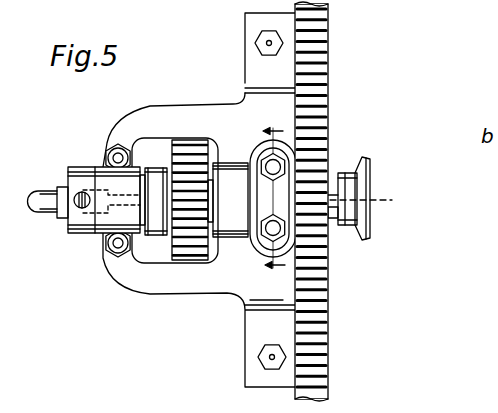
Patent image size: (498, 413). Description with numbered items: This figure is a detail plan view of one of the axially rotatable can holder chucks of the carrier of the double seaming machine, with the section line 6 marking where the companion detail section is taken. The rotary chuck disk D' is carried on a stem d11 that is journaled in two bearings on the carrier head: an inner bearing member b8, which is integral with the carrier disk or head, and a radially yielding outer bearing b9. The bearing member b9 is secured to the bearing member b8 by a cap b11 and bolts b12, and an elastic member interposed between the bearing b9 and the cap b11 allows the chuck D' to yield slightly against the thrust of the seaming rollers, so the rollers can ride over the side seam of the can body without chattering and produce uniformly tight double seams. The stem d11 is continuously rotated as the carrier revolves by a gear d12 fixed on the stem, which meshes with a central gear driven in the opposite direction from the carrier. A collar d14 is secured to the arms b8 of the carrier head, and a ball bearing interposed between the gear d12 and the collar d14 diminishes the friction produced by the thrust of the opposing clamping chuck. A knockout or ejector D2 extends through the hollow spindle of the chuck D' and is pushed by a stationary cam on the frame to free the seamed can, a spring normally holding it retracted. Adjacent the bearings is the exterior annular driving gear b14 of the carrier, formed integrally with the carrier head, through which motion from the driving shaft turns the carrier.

The exterior annular driving gear b14 is at (318, 62).
The radially yielding outer bearing b9 is at (257, 251).
The bearing member b8 is at (110, 262).
The cap b11 is at (268, 170).
The bolts b12 is at (270, 227).
The axially rotatable can holder chuck D' is at (377, 176).
The knockout or ejector D2 is at (36, 211).
The stem d11 is at (335, 218).
The gear d12 is at (180, 261).
The collar d14 is at (163, 233).
The section line 6- 6 is at (274, 200).